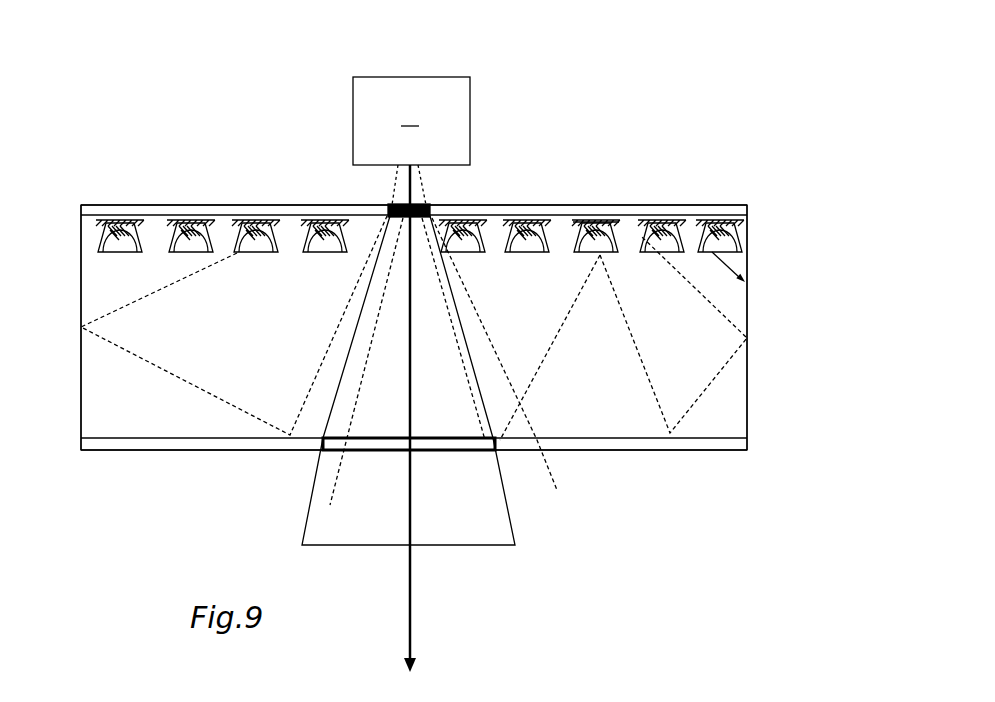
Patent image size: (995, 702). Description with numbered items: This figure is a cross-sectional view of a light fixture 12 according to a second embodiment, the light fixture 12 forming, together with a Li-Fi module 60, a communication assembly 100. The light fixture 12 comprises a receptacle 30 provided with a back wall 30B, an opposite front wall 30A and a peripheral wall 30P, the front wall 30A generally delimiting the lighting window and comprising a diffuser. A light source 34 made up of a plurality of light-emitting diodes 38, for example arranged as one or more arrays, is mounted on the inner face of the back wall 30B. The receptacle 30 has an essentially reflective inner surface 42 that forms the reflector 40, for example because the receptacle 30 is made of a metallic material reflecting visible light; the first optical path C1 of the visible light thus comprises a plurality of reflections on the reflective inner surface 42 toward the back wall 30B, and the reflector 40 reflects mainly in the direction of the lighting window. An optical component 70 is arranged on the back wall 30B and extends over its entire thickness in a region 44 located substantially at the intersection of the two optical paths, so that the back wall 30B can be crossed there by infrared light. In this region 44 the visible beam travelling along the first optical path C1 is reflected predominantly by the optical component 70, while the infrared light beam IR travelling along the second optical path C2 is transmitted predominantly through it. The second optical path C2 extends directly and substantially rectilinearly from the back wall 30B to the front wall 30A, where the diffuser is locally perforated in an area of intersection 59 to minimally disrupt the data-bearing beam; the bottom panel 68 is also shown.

The communication assembly 100 is at (596, 128).
The light fixture 12 is at (249, 180).
The receptacle 30 is at (645, 202).
The front wall 30A is at (632, 452).
The back wall 30B is at (152, 202).
The peripheral wall 30P is at (750, 350).
The light source 34 is at (570, 218).
The light-emitting diodes 38 is at (180, 248).
The reflector 40 is at (710, 230).
The reflective inner surface 42 is at (80, 370).
The region 44 is at (430, 205).
The area of intersection 59 is at (430, 450).
The Li-Fi module 60 is at (411, 121).
The bottom panel 68 is at (673, 453).
The optical component 70 is at (387, 203).
The first optical path C1 is at (193, 383).
The second optical path C2 is at (420, 622).
The infrared light beam IR is at (510, 522).